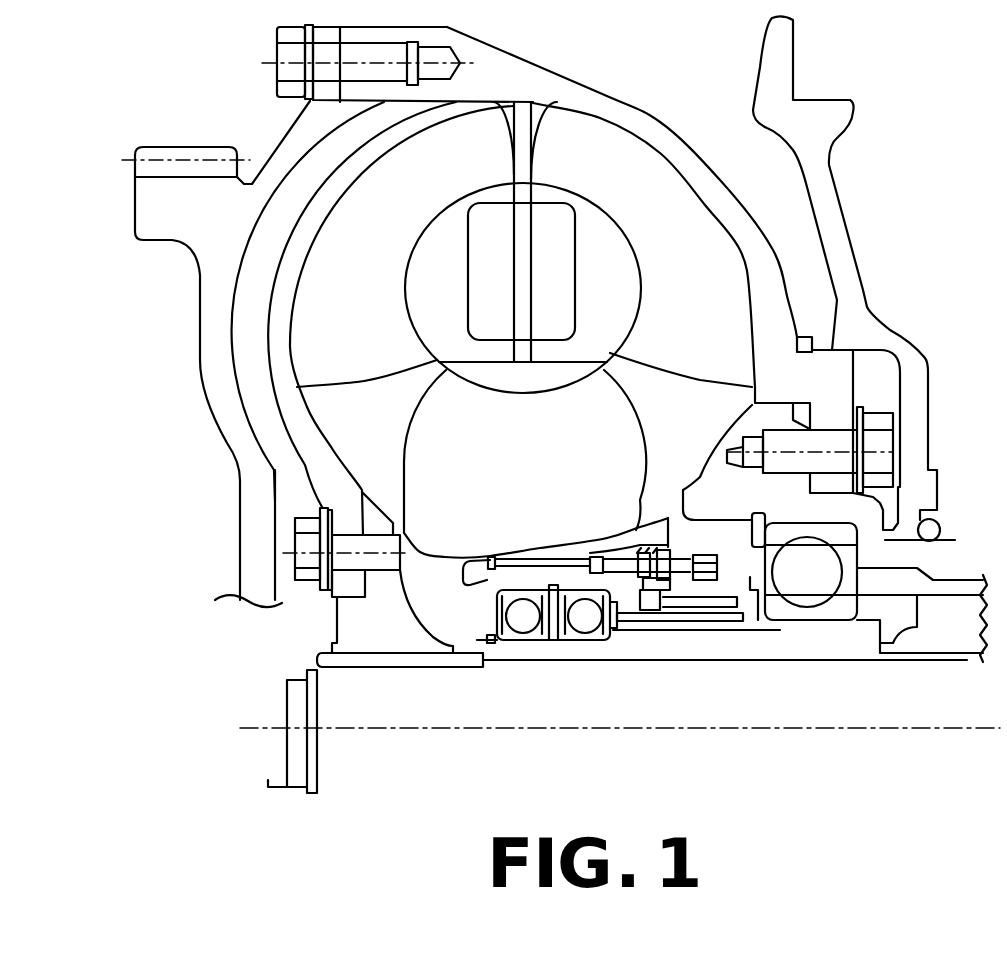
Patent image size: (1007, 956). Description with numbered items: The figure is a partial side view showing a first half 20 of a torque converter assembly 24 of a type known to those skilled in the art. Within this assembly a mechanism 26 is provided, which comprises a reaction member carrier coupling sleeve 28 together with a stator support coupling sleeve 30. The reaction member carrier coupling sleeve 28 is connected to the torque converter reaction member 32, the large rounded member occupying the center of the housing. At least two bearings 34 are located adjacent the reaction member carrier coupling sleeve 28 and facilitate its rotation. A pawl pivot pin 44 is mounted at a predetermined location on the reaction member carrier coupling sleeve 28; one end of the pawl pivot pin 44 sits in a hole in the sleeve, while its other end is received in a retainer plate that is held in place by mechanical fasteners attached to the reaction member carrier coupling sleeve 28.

The first half 20 is at (150, 104).
The torque converter assembly 24 is at (600, 150).
The mechanism 26 is at (710, 648).
The reaction member carrier coupling sleeve 28 is at (466, 586).
The stator support coupling sleeve 30 is at (718, 598).
The torque converter reaction member 32 is at (548, 522).
The bearings 34 is at (573, 640).
The pawl pivot pin 44 is at (666, 557).